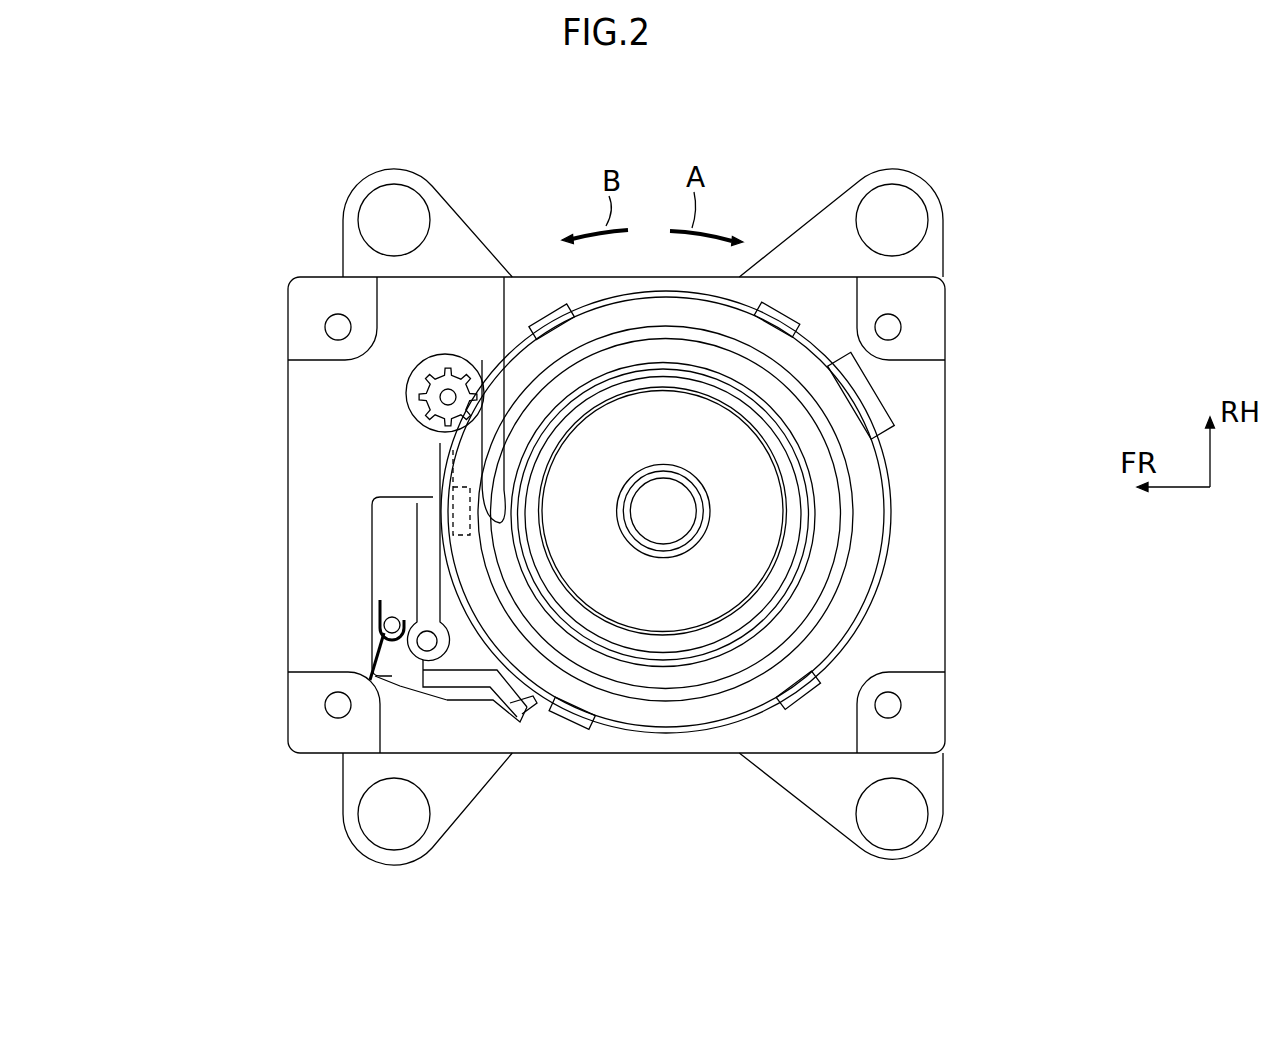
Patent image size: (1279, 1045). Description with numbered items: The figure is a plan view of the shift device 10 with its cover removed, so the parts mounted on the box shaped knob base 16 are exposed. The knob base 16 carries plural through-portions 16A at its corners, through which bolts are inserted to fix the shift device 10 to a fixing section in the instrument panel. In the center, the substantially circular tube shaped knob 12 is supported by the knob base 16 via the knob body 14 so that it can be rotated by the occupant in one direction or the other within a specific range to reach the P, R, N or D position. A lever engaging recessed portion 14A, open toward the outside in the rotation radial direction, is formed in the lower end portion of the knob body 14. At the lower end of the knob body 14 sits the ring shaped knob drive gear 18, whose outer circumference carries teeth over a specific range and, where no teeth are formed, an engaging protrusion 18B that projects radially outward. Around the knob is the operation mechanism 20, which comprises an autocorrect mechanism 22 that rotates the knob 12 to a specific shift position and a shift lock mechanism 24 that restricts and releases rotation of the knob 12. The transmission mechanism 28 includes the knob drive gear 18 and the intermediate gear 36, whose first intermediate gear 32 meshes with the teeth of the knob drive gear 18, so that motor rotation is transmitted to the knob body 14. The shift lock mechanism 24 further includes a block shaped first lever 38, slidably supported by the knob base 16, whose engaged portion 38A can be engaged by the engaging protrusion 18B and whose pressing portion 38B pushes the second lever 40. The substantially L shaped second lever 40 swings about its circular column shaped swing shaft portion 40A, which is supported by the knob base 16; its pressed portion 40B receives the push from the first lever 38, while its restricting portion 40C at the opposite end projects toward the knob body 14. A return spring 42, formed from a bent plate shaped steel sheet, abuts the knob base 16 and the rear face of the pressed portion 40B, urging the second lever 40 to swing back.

The shift device 10 is at (478, 146).
The knob 12 is at (828, 522).
The knob body 14 is at (667, 726).
The lever engaging recessed portion 14A is at (482, 360).
The knob base 16 is at (947, 640).
The through-portions 16A is at (346, 172).
The knob drive gear 18 is at (711, 515).
The engaging protrusion 18B is at (562, 714).
The operation mechanism 20 is at (334, 450).
The autocorrect mechanism 22 is at (382, 388).
The shift lock mechanism 24 is at (340, 573).
The transmission mechanism 28 is at (449, 347).
The first intermediate gear 32 is at (437, 363).
The intermediate gear 36 is at (445, 393).
The first lever 38 is at (447, 694).
The engaged portion 38A is at (518, 712).
The pressing portion 38B is at (385, 675).
The second lever 40 is at (414, 532).
The swing shaft portion 40A is at (392, 688).
The pressed portion 40B is at (425, 688).
The restricting portion 40C is at (503, 480).
The return spring 42 is at (425, 642).